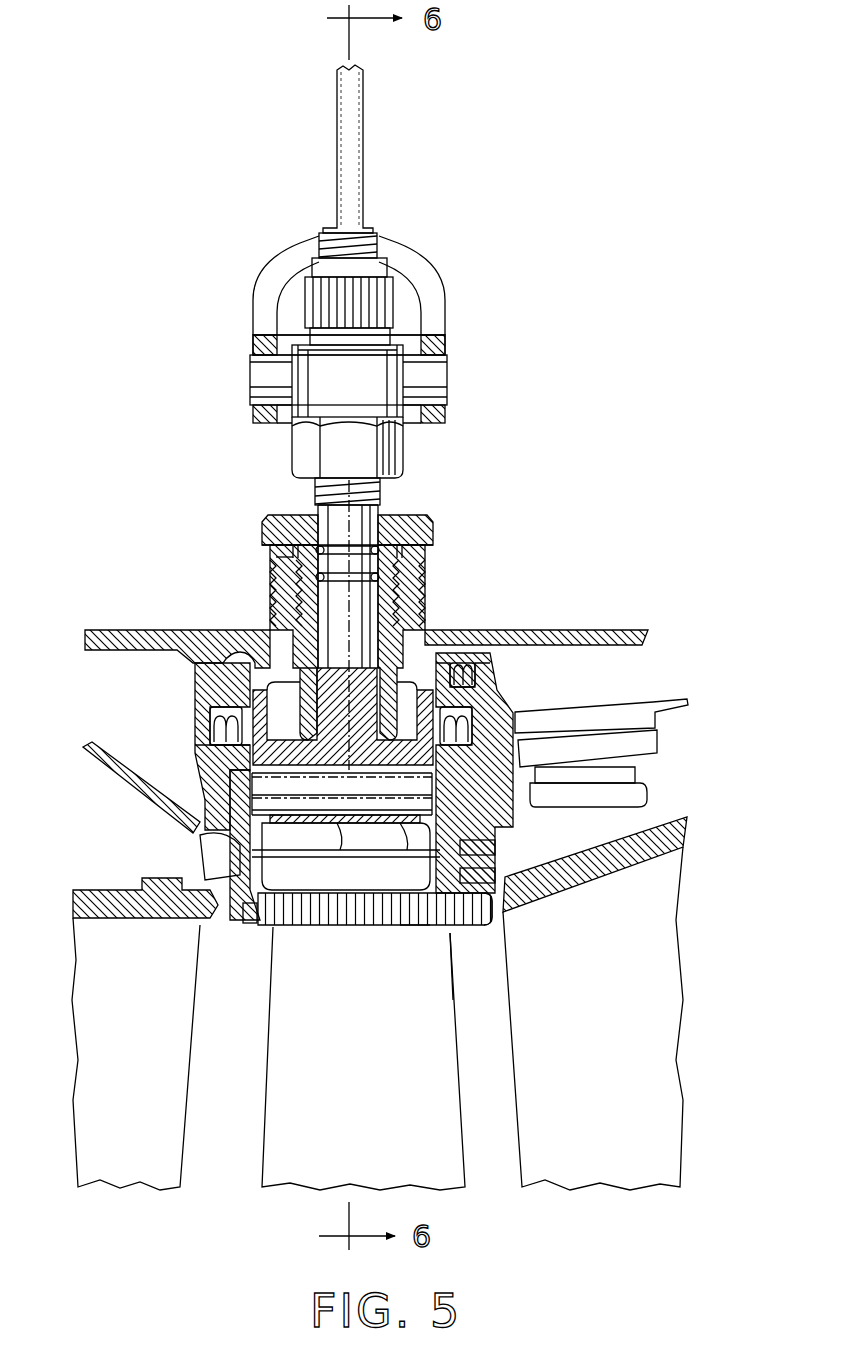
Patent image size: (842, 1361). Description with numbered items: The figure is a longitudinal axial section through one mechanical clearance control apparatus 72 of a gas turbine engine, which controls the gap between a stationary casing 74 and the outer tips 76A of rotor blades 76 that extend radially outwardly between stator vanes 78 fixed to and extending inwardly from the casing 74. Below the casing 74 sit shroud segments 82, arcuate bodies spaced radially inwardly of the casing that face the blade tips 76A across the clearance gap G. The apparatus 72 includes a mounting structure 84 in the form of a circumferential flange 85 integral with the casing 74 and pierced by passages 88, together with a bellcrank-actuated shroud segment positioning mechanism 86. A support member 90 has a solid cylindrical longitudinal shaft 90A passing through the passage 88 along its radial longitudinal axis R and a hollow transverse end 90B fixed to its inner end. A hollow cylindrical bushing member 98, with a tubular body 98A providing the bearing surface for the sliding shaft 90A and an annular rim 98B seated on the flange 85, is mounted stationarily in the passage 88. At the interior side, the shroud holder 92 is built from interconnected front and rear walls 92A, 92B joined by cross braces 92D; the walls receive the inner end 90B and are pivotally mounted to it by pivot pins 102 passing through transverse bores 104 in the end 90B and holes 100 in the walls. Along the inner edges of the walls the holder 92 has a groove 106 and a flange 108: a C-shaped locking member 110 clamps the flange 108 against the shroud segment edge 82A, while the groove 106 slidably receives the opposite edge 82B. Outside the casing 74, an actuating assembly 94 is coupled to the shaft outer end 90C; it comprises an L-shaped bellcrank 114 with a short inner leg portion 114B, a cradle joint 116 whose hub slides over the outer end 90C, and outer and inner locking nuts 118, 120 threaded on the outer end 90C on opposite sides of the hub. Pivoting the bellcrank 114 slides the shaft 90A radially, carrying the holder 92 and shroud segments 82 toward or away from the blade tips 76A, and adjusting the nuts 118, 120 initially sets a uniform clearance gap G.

The clearance control apparatus 72 is at (514, 261).
The stationary casing 74 is at (596, 627).
The blades 76 is at (365, 1057).
The outer tips 76A is at (460, 936).
The stator vanes 78 is at (137, 1057).
The shroud segments 82 is at (340, 918).
The edge 82A is at (478, 922).
The opposite shroud segment edge 82B is at (200, 845).
The mounting structure 84 is at (497, 545).
The circumferential flange 85 is at (276, 557).
The shroud segment positioning mechanism 86 is at (458, 383).
The passages 88 is at (397, 596).
The support members 90 is at (345, 598).
The longitudinal shaft 90A is at (367, 736).
The transverse end 90B is at (342, 857).
The outer end 90C is at (315, 496).
The shroud holder 92 is at (438, 662).
The front wall 92A is at (253, 745).
The rear wall 92B is at (490, 700).
The cross braces 92D is at (275, 720).
The actuating assemblies 94 is at (464, 345).
The bushing member 98 is at (289, 630).
The tubular body 98A is at (307, 588).
The annular rim 98B is at (265, 523).
The holes 100 is at (258, 785).
The pivot pins 102 is at (193, 820).
The transverse bores 104 is at (406, 860).
The groove 106 is at (252, 922).
The flange 108 is at (496, 832).
The C-shaped locking member 110 is at (496, 862).
The bellcrank 114 is at (358, 132).
The short inner leg portion 114B is at (423, 300).
The cradle joint 116 is at (323, 402).
The outer locking nut 118 is at (372, 290).
The inner locking nut 120 is at (403, 455).
The longitudinal axis R is at (380, 510).
The clearance gap G is at (410, 928).